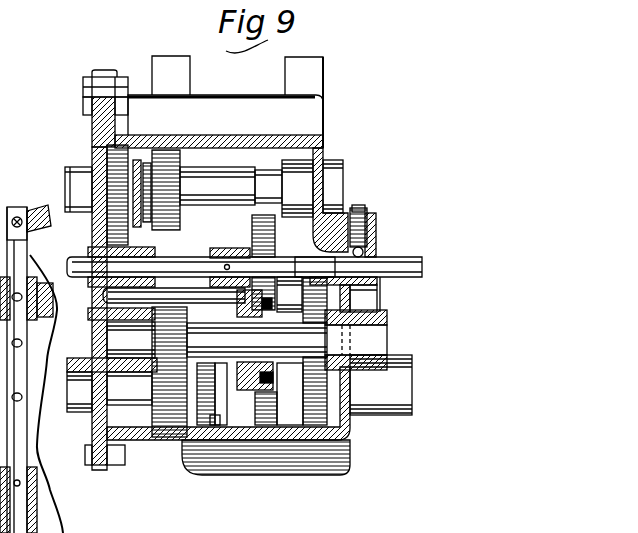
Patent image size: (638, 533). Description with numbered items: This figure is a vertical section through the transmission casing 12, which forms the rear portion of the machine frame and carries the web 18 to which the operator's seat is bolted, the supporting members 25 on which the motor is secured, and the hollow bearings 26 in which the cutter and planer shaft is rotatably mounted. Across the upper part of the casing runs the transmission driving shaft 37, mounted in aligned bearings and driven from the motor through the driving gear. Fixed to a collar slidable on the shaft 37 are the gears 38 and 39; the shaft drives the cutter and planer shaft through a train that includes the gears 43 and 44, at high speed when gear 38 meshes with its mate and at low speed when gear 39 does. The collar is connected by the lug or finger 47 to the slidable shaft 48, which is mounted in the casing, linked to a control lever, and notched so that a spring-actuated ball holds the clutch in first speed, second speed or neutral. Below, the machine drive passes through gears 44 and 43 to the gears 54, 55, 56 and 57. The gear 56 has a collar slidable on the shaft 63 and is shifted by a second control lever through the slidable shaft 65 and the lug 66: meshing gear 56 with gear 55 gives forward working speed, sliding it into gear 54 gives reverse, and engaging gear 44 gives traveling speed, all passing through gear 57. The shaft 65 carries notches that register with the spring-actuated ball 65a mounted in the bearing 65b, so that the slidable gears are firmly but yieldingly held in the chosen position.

The transmission casing 12 is at (335, 128).
The web 18 is at (74, 358).
The supporting members 25 is at (296, 58).
The hollow bearings 26 is at (78, 408).
The transmission driving shaft 37 is at (258, 178).
The gear 38 is at (92, 174).
The gear 39 is at (180, 226).
The gear 43 is at (305, 252).
The gear 44 is at (283, 233).
The lug or finger 47 is at (120, 190).
The slidable shaft 48 is at (12, 451).
The gear 54 is at (314, 408).
The gear 55 is at (213, 425).
The gear 56 is at (279, 395).
The gear 57 is at (160, 378).
The shaft 63 is at (380, 338).
The slidable shaft 65 is at (405, 276).
The spring-actuated ball 65a is at (365, 253).
The bearing 65b is at (370, 222).
The lug 66 is at (247, 303).